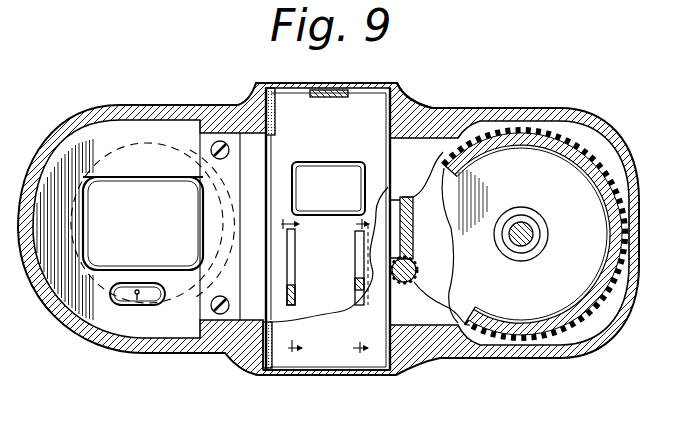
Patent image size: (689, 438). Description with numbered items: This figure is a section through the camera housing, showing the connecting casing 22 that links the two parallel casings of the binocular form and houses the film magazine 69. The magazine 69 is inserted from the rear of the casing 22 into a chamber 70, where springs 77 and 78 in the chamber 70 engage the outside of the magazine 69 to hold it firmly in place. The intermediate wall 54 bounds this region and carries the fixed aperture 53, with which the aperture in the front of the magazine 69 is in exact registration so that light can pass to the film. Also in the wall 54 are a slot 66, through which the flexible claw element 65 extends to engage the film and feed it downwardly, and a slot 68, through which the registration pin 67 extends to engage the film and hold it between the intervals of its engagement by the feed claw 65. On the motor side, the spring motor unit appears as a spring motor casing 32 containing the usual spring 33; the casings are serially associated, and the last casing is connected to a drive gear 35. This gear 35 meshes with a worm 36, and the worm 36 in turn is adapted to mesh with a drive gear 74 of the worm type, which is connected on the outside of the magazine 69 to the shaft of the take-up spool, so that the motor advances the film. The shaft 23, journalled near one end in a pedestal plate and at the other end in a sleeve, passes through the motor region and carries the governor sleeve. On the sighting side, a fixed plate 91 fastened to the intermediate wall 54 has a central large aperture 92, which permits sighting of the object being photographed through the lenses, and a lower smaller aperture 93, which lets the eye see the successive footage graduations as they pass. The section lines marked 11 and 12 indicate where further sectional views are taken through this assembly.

The section line 11- 11 is at (303, 288).
The section line 12- 12 is at (373, 286).
The connecting casing 22 is at (380, 86).
The shaft 23 is at (540, 225).
The spring motor casing 32 is at (567, 152).
The spring 33 is at (522, 209).
The drive gear 35 is at (432, 183).
The worm 36 is at (406, 285).
The fixed aperture 53 is at (328, 183).
The intermediate wall 54 is at (381, 121).
The flexible claw element 65 is at (356, 283).
The slot 66 is at (360, 249).
The registration pin 67 is at (292, 294).
The slot 68 is at (291, 257).
The magazine 69 is at (349, 371).
The chamber 70 is at (291, 96).
The drive gear 74 is at (414, 229).
The spring 77 is at (333, 93).
The spring 78 is at (266, 92).
The fixed plate 91 is at (167, 167).
The central large aperture 92 is at (88, 182).
The lower smaller aperture 93 is at (122, 283).